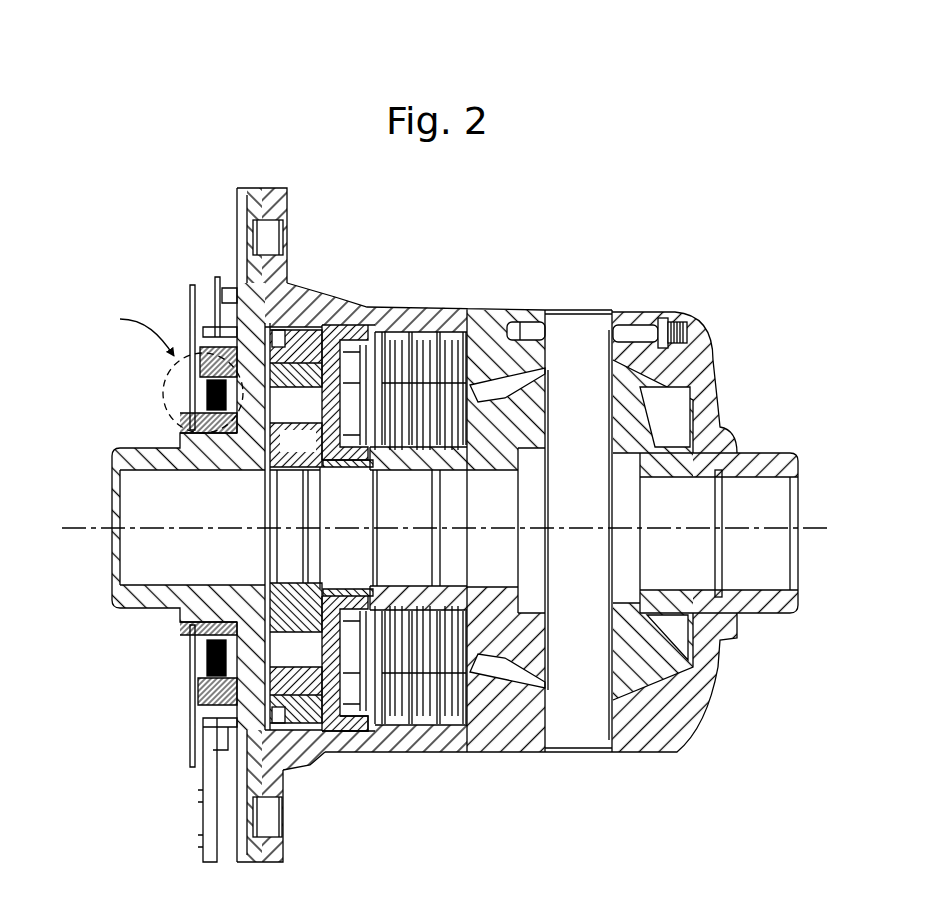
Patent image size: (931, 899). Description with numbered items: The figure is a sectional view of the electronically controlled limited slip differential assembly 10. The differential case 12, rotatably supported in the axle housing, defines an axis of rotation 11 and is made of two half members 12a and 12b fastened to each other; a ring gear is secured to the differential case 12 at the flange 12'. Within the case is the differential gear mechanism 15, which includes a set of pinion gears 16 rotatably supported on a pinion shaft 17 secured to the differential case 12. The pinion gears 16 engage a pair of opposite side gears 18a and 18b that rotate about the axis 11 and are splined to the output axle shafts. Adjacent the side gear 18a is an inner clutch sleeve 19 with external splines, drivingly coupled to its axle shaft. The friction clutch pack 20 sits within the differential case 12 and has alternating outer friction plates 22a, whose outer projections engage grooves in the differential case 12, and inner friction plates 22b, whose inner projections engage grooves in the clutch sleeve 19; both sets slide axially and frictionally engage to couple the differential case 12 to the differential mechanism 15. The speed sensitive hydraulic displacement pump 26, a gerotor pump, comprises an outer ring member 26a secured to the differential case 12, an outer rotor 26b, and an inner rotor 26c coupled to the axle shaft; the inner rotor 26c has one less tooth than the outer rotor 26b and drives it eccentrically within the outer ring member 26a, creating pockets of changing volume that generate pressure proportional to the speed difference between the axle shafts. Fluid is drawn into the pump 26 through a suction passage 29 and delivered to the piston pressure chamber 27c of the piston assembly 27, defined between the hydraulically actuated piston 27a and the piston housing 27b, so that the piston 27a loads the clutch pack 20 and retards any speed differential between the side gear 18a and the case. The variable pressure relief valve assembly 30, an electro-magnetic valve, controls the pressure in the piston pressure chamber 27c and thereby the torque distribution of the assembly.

The differential assembly 10 is at (560, 274).
The axis of rotation 11 is at (88, 530).
The differential case 12 is at (705, 511).
The half member 12a is at (192, 612).
The half member 12b is at (503, 746).
The flange 12' is at (289, 531).
The differential gear mechanism 15 is at (697, 507).
The pinion gears 16 is at (647, 388).
The pinion shaft 17 is at (578, 531).
The side gear 18a is at (490, 610).
The side gear 18b is at (658, 597).
The inner clutch sleeve 19 is at (403, 586).
The friction clutch pack 20 is at (477, 341).
The outer friction plates 22a is at (422, 332).
The inner friction plates 22b is at (395, 458).
The hydraulic displacement pump 26 is at (252, 457).
The outer ring member 26a is at (312, 738).
The outer rotor 26b is at (293, 387).
The inner rotor 26c is at (296, 527).
The piston assembly 27 is at (349, 594).
The piston 27a is at (360, 464).
The piston housing 27b is at (341, 330).
The piston pressure chamber 27c is at (350, 732).
The suction passage 29 is at (232, 750).
The variable pressure relief valve assembly 30 is at (162, 388).